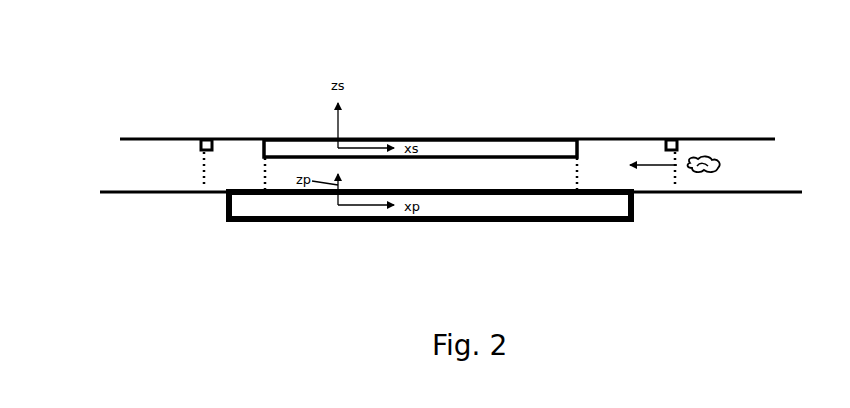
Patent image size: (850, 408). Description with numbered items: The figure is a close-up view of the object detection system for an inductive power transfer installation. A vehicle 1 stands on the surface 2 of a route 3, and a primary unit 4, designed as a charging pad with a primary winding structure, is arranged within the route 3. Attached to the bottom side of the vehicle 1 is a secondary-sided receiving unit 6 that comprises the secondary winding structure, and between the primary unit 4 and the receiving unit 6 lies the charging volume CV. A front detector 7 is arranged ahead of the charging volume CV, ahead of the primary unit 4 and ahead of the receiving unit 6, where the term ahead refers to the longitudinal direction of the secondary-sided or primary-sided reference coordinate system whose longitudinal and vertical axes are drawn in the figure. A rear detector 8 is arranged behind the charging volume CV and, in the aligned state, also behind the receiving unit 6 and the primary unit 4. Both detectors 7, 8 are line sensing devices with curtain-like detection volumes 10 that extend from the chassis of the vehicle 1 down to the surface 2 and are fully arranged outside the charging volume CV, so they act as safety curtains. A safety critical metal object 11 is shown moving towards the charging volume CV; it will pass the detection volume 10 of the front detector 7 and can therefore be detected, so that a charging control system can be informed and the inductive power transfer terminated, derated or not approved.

The vehicle 1 is at (678, 19).
The surface 2 is at (783, 193).
The route 3 is at (698, 338).
The primary unit 4 is at (440, 222).
The secondary-sided receiving unit 6 is at (448, 139).
The front detector 7 is at (677, 139).
The rear detector 8 is at (205, 139).
The detection volume 10 is at (200, 185).
The safety critical metal object 11 is at (713, 160).
The charging volume CV is at (565, 177).